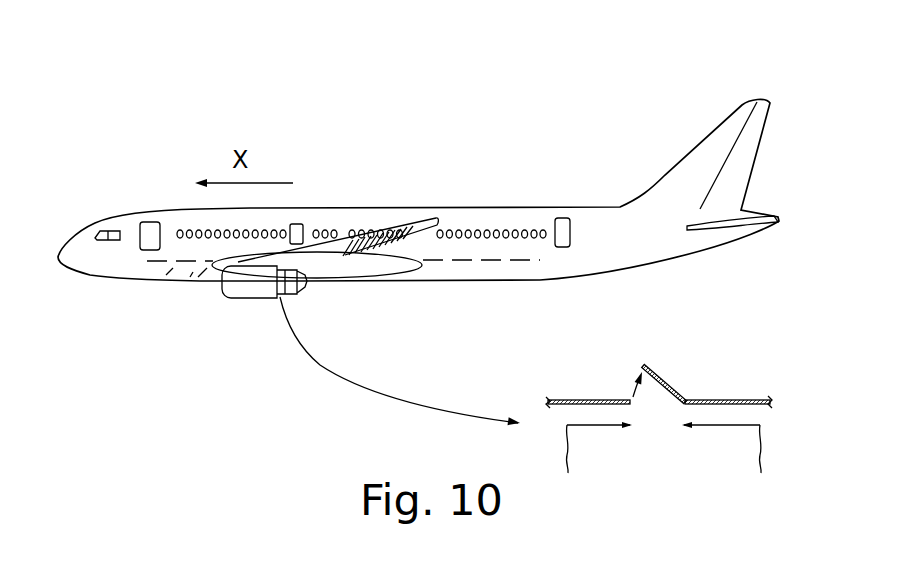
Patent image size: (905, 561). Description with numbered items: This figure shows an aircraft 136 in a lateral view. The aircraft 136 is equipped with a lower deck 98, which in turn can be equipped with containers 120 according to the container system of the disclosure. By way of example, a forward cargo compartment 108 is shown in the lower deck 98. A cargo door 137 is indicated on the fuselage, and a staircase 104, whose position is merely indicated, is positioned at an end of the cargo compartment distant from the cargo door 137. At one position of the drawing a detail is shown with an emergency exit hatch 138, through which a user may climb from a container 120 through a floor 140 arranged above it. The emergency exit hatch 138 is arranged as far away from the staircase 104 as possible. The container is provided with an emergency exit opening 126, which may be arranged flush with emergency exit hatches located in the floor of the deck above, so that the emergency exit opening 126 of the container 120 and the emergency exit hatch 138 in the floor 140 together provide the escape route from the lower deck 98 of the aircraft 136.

The aircraft 136 is at (413, 148).
The staircase 104 is at (320, 265).
The lower deck 98 is at (201, 272).
The cargo door 137 is at (175, 268).
The floor 140 is at (583, 400).
The emergency exit hatch 138 is at (677, 382).
The forward cargo compartment 108 is at (780, 410).
The container 120 is at (647, 493).
The emergency exit opening 126 is at (672, 435).